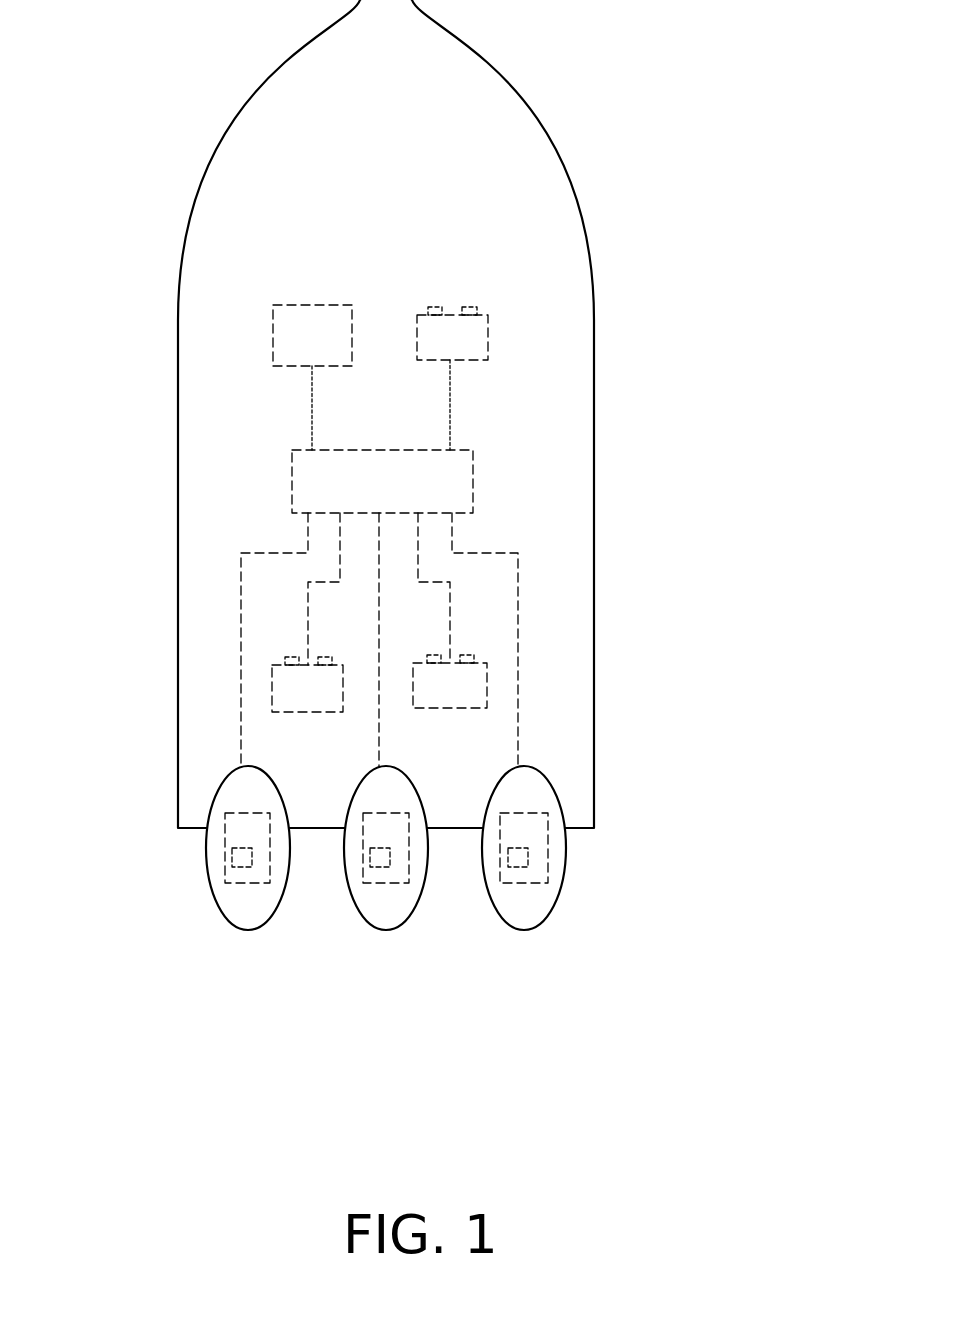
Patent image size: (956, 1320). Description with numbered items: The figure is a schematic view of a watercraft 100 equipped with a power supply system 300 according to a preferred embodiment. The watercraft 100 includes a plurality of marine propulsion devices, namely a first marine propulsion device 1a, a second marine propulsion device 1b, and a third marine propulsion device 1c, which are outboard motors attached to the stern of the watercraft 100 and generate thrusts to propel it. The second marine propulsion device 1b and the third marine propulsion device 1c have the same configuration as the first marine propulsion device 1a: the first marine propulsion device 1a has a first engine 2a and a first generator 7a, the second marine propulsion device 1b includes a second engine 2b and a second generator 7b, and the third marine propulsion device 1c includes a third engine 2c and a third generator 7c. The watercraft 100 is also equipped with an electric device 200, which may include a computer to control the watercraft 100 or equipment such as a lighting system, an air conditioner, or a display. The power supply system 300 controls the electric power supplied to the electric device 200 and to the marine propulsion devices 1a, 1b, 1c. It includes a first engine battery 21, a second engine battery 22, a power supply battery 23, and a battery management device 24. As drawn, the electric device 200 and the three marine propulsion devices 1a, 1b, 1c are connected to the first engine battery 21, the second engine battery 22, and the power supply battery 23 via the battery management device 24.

The watercraft 100 is at (510, 80).
The power supply system 300 is at (535, 283).
The electric device 200 is at (272, 337).
The power supply battery 23 is at (488, 336).
The battery management device 24 is at (473, 483).
The first engine battery 21 is at (272, 692).
The second engine battery 22 is at (487, 683).
The first marine propulsion device 1a is at (218, 910).
The second marine propulsion device 1b is at (356, 910).
The third marine propulsion device 1c is at (494, 910).
The first engine 2a is at (247, 886).
The second engine 2b is at (385, 886).
The third engine 2c is at (523, 886).
The first generator 7a is at (234, 862).
The second generator 7b is at (372, 862).
The third generator 7c is at (510, 862).